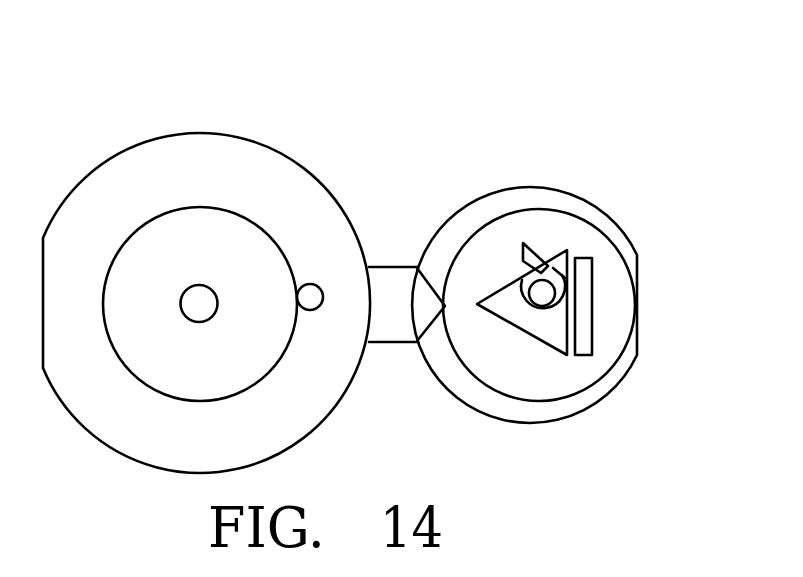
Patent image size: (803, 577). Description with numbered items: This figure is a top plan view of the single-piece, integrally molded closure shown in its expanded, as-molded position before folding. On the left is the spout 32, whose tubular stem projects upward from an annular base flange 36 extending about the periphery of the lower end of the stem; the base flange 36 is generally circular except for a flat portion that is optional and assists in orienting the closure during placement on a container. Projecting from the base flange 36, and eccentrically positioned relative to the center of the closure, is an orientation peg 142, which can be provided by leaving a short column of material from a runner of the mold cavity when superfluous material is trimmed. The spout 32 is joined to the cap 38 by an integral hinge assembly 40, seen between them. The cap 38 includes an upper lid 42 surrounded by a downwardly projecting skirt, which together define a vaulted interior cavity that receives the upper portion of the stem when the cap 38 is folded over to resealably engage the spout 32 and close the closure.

The spout 32 is at (148, 110).
The base flange 36 is at (202, 188).
The orientation peg 142 is at (313, 285).
The hinge assembly 40 is at (395, 243).
The cap 38 is at (563, 272).
The upper lid 42 is at (622, 380).